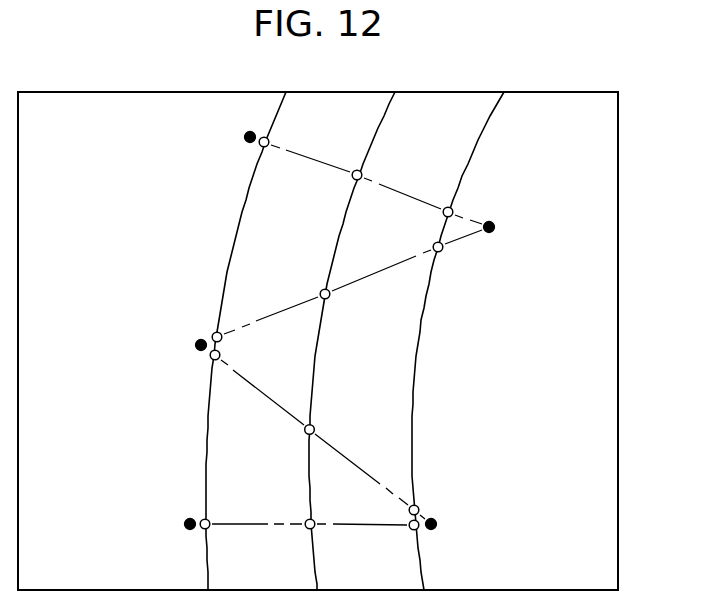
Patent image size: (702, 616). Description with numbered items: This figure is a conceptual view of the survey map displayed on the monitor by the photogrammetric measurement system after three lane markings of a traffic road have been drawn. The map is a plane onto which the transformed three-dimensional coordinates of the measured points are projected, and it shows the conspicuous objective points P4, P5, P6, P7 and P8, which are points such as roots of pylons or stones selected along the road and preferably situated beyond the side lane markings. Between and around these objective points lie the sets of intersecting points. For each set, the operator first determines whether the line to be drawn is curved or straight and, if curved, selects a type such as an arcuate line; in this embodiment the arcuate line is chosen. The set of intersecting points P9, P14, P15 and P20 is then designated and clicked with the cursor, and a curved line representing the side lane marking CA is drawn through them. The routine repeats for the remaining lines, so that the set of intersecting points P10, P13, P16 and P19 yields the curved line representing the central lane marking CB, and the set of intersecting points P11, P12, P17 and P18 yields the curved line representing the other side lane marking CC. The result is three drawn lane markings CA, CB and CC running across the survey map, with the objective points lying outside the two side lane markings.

The objective point P4 is at (245, 137).
The objective point P5 is at (495, 228).
The objective point P6 is at (200, 340).
The objective point P7 is at (436, 529).
The objective point P8 is at (186, 529).
The intersecting point P9 is at (267, 148).
The intersecting point P10 is at (362, 172).
The intersecting point P11 is at (455, 210).
The intersecting point P12 is at (443, 251).
The intersecting point P13 is at (329, 300).
The intersecting point P14 is at (222, 340).
The intersecting point P15 is at (210, 358).
The intersecting point P16 is at (316, 427).
The intersecting point P17 is at (419, 508).
The intersecting point P18 is at (410, 530).
The intersecting point P19 is at (305, 527).
The intersecting point P20 is at (208, 519).
The side lane marking CA is at (206, 430).
The central lane marking CB is at (330, 245).
The side lane marking CC is at (417, 385).